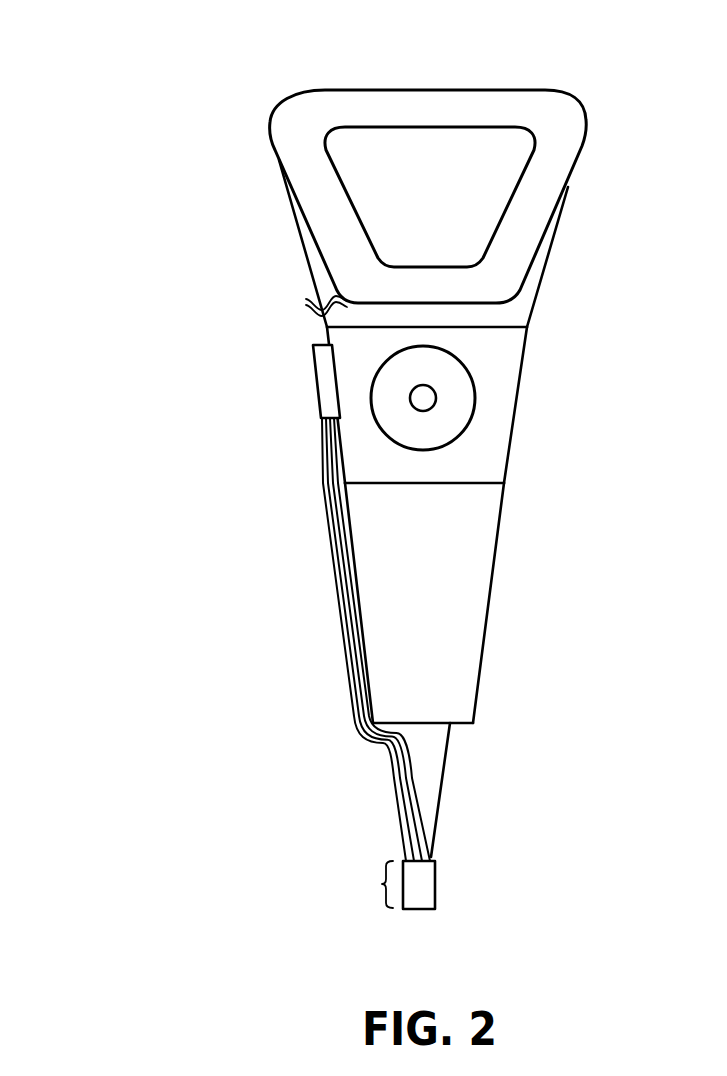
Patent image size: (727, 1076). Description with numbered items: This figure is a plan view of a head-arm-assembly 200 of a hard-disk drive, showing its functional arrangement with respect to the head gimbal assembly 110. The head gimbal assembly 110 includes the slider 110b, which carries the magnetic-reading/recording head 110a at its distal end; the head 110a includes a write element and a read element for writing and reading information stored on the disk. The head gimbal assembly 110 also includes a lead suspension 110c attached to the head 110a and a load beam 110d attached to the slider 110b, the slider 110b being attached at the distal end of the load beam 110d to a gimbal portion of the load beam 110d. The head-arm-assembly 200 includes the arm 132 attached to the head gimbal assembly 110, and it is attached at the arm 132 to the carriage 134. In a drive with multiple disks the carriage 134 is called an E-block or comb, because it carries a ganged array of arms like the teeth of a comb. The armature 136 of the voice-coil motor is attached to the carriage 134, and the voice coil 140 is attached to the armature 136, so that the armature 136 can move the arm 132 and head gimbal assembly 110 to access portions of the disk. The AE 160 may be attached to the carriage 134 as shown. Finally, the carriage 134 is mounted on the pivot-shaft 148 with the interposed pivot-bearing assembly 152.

The handheld controller 200 is at (90, 72).
The head gimbal assembly 110 is at (292, 663).
The magnetic-reading/recording head 110a is at (408, 899).
The slider 110b is at (383, 883).
The lead suspension 110c is at (393, 793).
The load beam 110d is at (420, 760).
The arm 132 is at (418, 560).
The carriage 134 is at (478, 448).
The armature 136 is at (325, 282).
The voice coil 140 is at (325, 220).
The pivot-shaft 148 is at (423, 398).
The pivot-bearing assembly 152 is at (455, 408).
The AE 160 is at (323, 390).